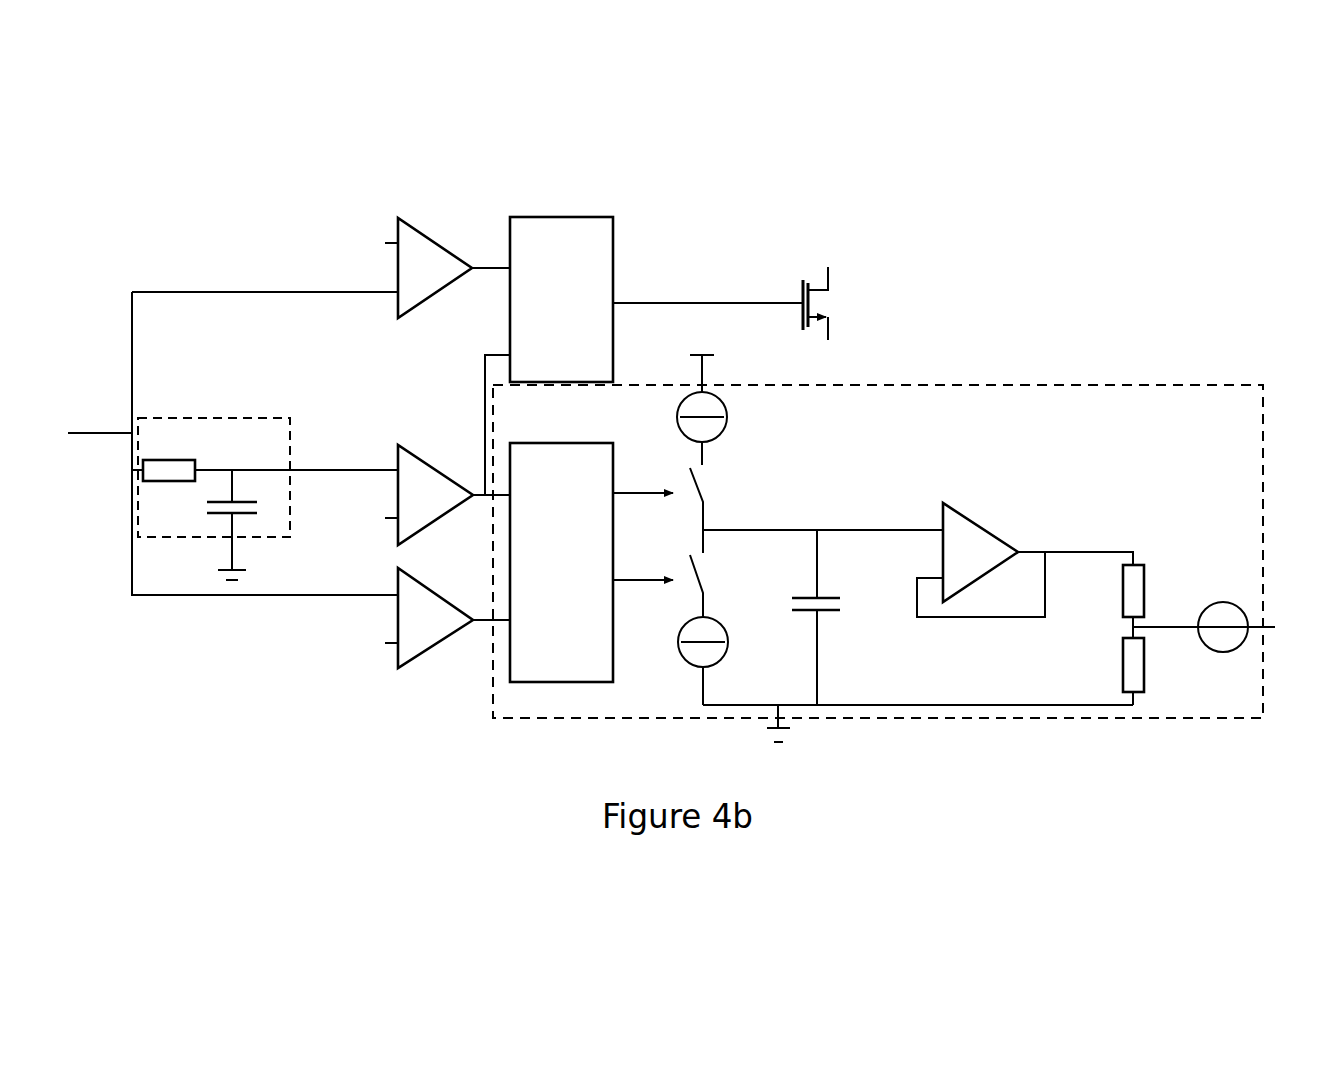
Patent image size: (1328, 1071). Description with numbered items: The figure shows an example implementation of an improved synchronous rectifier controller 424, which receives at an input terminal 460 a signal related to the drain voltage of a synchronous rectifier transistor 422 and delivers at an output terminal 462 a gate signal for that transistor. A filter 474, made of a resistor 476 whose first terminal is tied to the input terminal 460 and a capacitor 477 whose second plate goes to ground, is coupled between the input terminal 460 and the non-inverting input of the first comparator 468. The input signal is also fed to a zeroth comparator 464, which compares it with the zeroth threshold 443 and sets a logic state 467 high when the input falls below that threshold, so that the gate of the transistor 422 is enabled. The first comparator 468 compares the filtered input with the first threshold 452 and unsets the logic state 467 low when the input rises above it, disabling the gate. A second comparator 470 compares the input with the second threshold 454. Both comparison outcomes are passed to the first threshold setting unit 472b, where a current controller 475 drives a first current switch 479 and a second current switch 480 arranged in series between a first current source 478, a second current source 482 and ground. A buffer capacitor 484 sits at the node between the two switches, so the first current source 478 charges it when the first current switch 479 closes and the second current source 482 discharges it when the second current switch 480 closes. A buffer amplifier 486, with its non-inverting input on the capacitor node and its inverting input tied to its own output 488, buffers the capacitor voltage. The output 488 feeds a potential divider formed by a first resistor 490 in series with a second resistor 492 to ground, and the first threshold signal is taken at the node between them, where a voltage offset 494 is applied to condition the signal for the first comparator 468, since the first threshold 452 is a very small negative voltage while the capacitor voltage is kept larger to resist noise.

The synchronous rectifier controller 424 is at (66, 188).
The input terminal 460 is at (117, 432).
The filter 474 is at (243, 415).
The resistor 476 is at (150, 483).
The capacitor 477 is at (218, 515).
The zeroth comparator 464 is at (398, 218).
The zeroth threshold 443 is at (360, 232).
The logic state 467 is at (510, 217).
The output terminal 462 is at (748, 303).
The synchronous rectifier transistor 422 is at (803, 282).
The first threshold setting unit 472b is at (980, 385).
The first current source 478 is at (715, 397).
The first current switch 479 is at (712, 475).
The second current switch 480 is at (712, 568).
The second current source 482 is at (686, 660).
The buffer capacitor 484 is at (827, 612).
The buffer amplifier 486 is at (943, 503).
The output of the buffer amplifier 488 is at (1030, 552).
The first resistor 490 is at (1123, 593).
The second resistor 492 is at (1123, 688).
The voltage offset 494 is at (1222, 653).
The first comparator 468 is at (398, 445).
The first threshold 452 is at (385, 537).
The second comparator 470 is at (397, 670).
The second threshold 454 is at (385, 662).
The current controller 475 is at (561, 683).